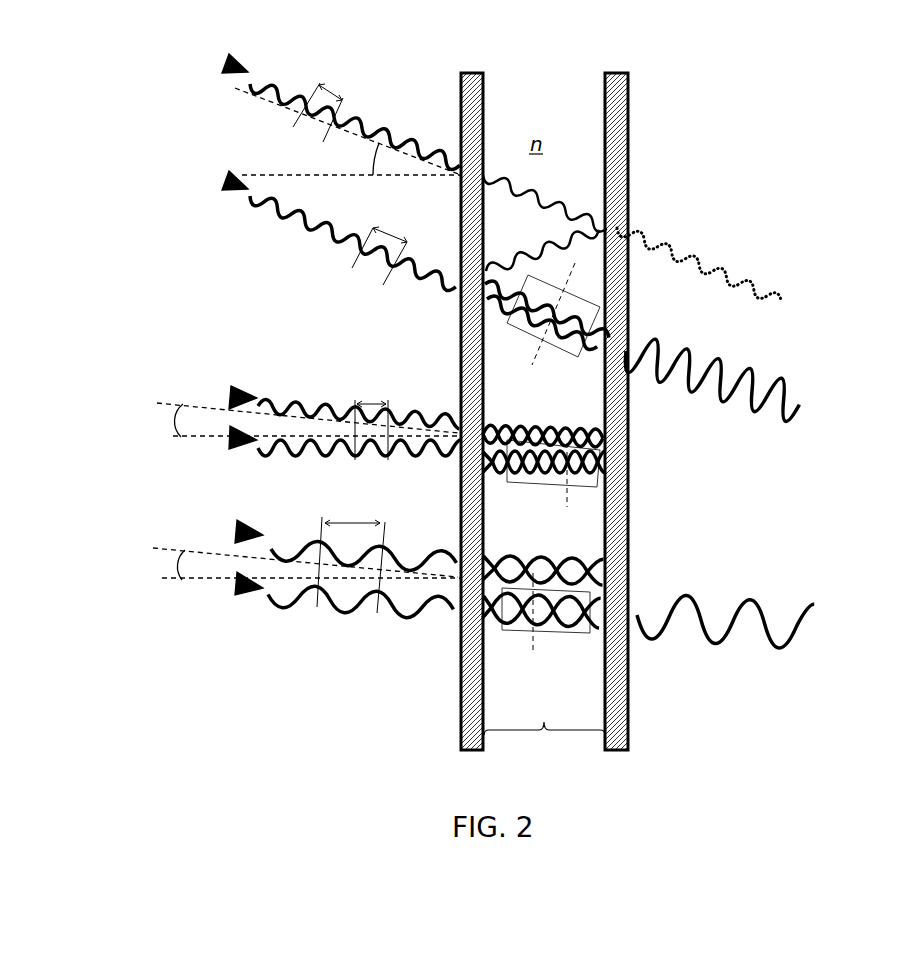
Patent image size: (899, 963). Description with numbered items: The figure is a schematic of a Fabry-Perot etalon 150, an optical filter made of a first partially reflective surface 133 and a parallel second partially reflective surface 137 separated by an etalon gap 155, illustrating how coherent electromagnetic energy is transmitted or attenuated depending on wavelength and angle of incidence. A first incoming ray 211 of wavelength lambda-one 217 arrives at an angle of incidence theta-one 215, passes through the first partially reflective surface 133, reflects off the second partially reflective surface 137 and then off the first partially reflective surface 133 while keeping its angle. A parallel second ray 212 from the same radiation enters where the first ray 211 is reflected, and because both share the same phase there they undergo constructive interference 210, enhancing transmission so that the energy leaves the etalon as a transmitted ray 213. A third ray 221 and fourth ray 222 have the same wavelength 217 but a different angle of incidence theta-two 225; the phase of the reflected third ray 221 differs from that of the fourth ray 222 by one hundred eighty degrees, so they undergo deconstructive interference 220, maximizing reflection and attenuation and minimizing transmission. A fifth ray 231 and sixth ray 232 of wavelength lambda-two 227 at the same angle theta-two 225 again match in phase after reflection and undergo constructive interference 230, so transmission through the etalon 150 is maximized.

The Fabry-Perot etalon 150 is at (600, 411).
The first partially reflective surface 133 is at (462, 680).
The second partially reflective surface 137 is at (606, 678).
The etalon gap 155 is at (544, 717).
The first incoming ray 211 is at (327, 103).
The second ray 212 is at (325, 232).
The angle of incidence theta1 215 is at (337, 156).
The wavelength lambda1 217 is at (359, 253).
The constructive interference 210 is at (607, 268).
The output beam 213 is at (733, 378).
The third ray 221 is at (325, 396).
The fourth ray 222 is at (325, 451).
The angle of incidence theta2 225 is at (132, 558).
The deconstructive interference 220 is at (607, 442).
The fifth ray 231 is at (323, 539).
The sixth ray 232 is at (322, 598).
The wavelength lambda2 227 is at (369, 550).
The constructive interference 230 is at (580, 590).